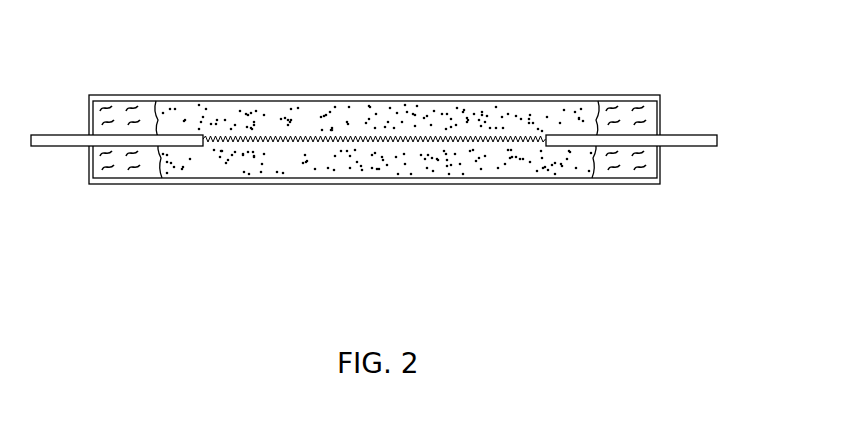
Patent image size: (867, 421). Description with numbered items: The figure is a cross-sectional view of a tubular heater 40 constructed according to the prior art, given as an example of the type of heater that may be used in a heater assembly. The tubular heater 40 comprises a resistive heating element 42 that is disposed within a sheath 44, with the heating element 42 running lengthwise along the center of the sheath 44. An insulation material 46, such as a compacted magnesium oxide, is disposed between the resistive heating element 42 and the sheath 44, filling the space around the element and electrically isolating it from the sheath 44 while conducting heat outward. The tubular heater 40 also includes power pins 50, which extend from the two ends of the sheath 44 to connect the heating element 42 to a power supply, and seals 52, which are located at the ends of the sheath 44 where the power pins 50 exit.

The tubular heater 40 is at (385, 133).
The resistive heating element 42 is at (228, 143).
The sheath 44 is at (448, 184).
The insulation material 46 is at (347, 171).
The power pins 50 is at (682, 147).
The seals 52 is at (117, 168).